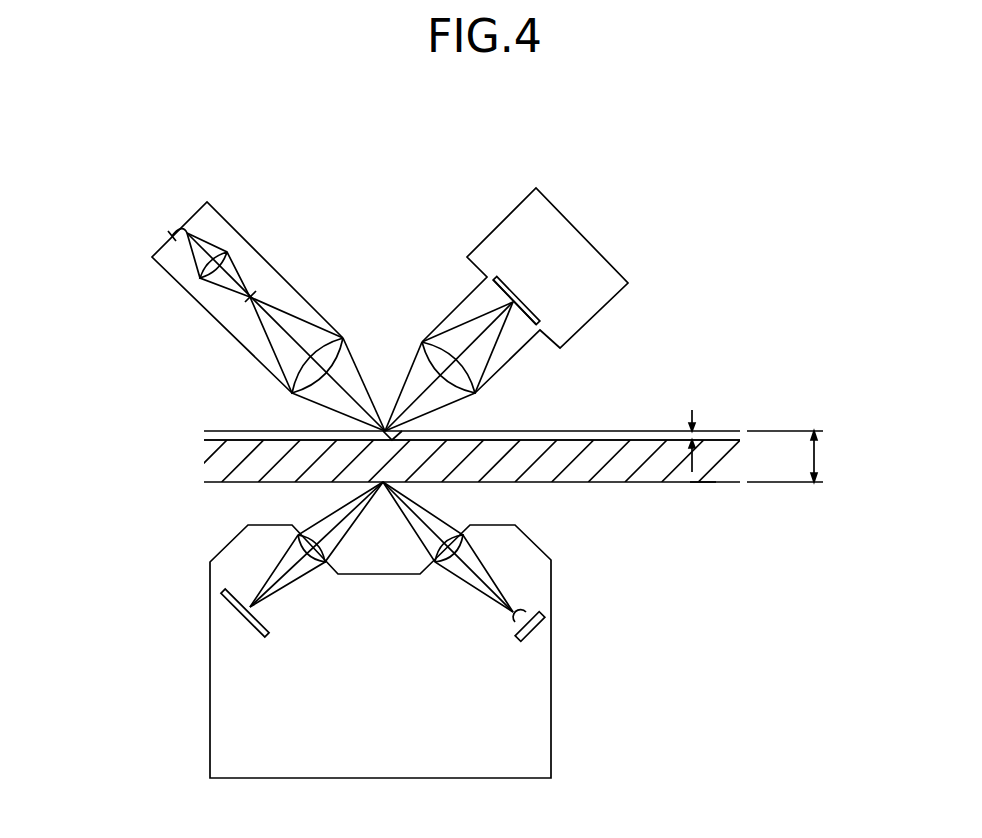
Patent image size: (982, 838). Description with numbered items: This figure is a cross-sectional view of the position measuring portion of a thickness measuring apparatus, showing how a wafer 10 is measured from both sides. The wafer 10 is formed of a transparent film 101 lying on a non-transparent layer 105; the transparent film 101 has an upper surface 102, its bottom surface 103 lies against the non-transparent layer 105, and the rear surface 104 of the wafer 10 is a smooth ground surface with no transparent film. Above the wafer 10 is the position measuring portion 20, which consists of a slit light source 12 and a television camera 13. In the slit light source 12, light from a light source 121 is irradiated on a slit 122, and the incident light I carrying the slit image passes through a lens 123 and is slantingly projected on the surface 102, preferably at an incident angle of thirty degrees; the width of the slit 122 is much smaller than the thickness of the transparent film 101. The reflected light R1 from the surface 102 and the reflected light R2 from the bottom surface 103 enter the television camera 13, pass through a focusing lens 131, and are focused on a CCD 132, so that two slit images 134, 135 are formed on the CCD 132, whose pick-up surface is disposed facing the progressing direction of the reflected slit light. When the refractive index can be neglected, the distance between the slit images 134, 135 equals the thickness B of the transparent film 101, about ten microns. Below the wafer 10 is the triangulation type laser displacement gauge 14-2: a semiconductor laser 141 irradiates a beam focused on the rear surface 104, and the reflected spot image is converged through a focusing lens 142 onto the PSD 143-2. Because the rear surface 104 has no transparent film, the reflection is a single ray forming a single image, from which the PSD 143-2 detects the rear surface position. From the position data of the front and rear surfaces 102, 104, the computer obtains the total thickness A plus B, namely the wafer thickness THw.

The position measuring portion 20 is at (393, 162).
The wafer 10 is at (77, 428).
The transparent film 101 is at (204, 432).
The surface of the transparent layer 102 is at (508, 430).
The surface of the non-transparent layer 103 is at (558, 439).
The rear surface 104 is at (553, 483).
The non-transparent layer 105 is at (204, 477).
The slit light source 12 is at (214, 320).
The light source 121 is at (186, 233).
The slit 122 is at (248, 277).
The lens 123 is at (309, 322).
The incident light I is at (300, 403).
The television camera 13 is at (630, 288).
The focusing lens 131 is at (422, 342).
The CCD 132 is at (533, 308).
The slit image 134 is at (525, 280).
The slit image 135 is at (513, 287).
The reflected light R1 is at (410, 402).
The reflected light R2 is at (418, 405).
The triangulation type laser displacement gauge 14-2 is at (658, 737).
The semiconductor laser 141 is at (537, 612).
The focusing lens 142 is at (300, 542).
The PSD 143-2 is at (227, 610).
The thickness of the non-transparent layer A is at (703, 483).
The thickness of the transparent film B is at (700, 437).
The thickness of wafer THw is at (818, 456).